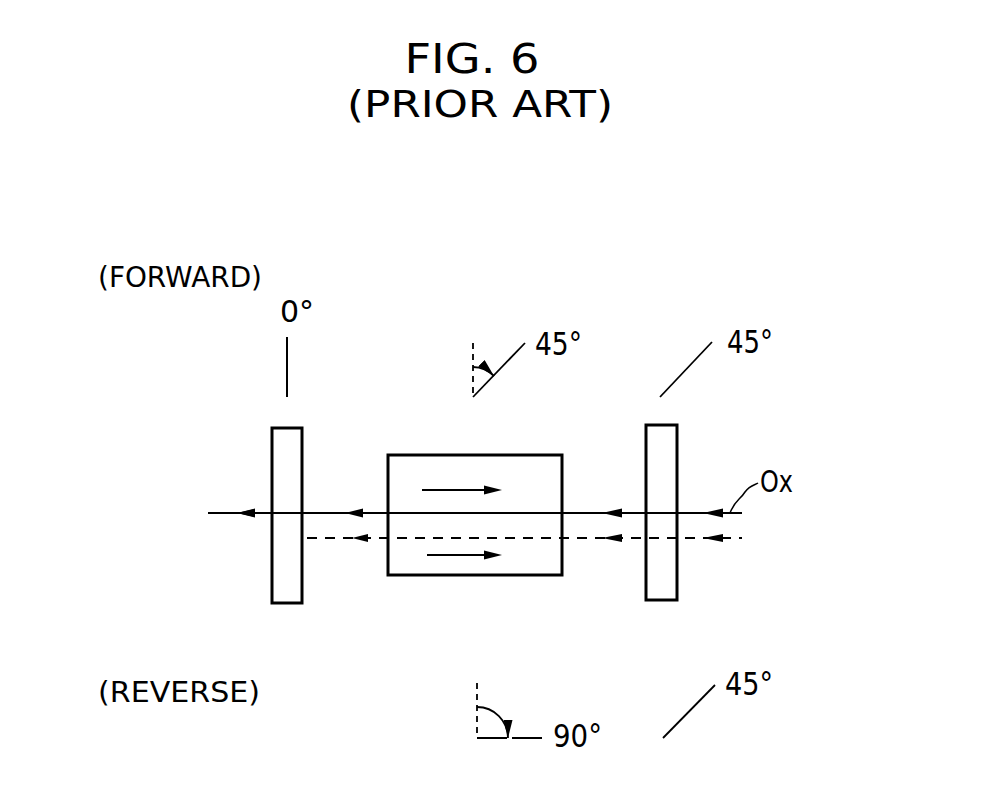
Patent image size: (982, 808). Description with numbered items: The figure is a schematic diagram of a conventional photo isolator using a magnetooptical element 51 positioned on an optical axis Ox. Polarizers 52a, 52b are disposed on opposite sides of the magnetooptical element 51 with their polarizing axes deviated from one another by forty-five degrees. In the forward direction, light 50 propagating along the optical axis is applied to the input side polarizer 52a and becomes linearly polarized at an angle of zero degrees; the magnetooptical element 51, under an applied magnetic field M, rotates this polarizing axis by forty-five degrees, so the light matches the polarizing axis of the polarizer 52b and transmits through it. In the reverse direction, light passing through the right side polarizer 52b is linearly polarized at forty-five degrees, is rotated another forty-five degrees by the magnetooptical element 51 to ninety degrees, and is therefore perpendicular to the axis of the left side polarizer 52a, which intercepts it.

The light 50 is at (222, 514).
The magnetooptical element 51 is at (538, 467).
The input side polarizer 52a is at (292, 462).
The polarizer 52b is at (663, 453).